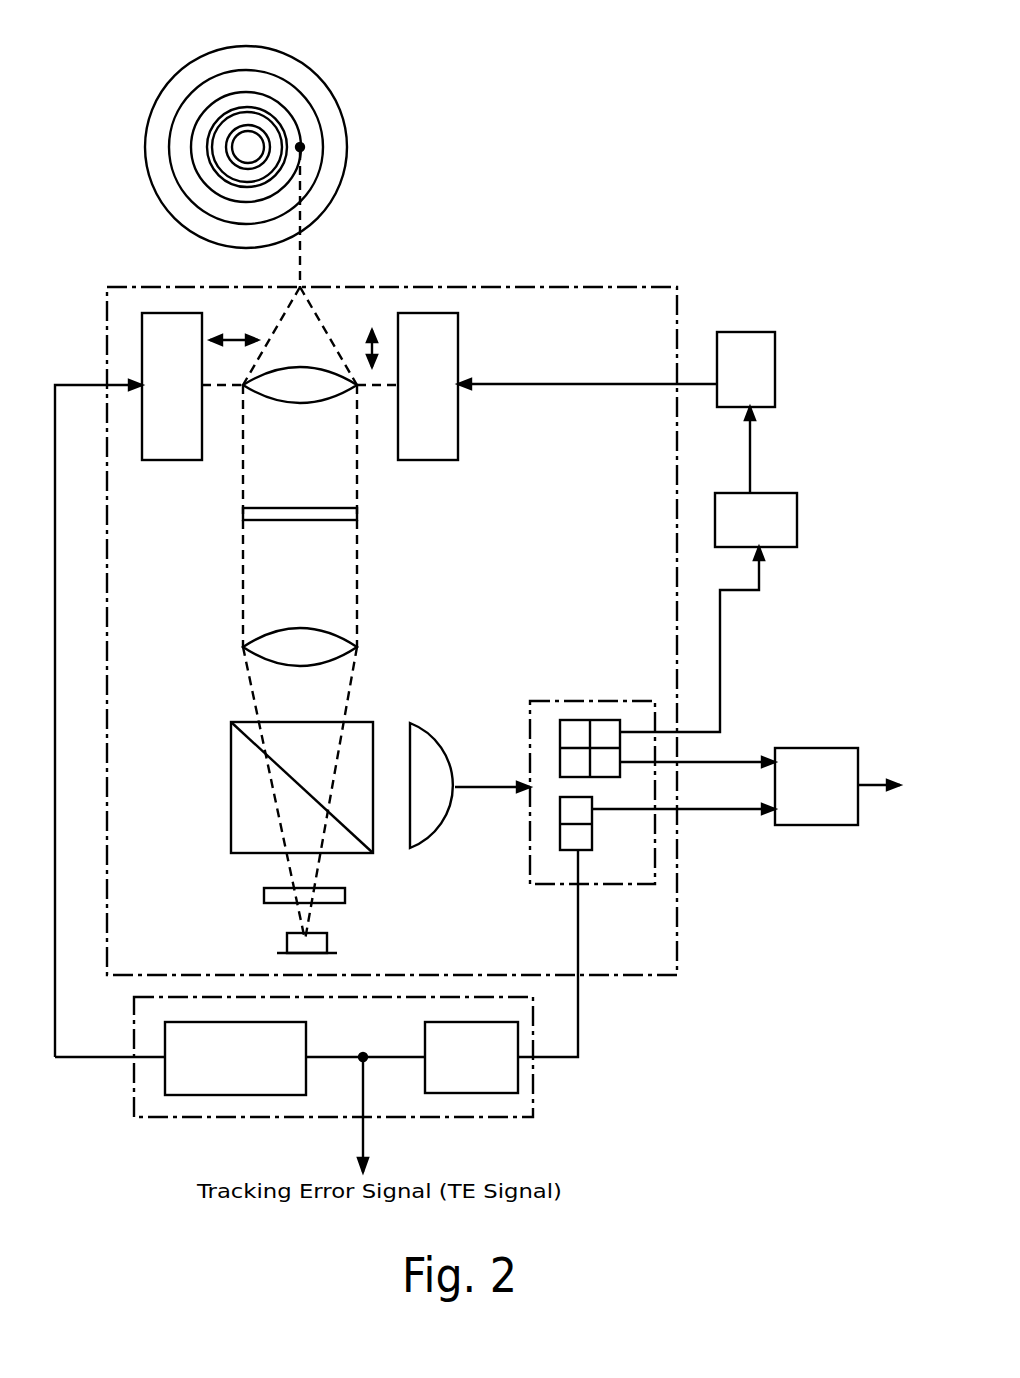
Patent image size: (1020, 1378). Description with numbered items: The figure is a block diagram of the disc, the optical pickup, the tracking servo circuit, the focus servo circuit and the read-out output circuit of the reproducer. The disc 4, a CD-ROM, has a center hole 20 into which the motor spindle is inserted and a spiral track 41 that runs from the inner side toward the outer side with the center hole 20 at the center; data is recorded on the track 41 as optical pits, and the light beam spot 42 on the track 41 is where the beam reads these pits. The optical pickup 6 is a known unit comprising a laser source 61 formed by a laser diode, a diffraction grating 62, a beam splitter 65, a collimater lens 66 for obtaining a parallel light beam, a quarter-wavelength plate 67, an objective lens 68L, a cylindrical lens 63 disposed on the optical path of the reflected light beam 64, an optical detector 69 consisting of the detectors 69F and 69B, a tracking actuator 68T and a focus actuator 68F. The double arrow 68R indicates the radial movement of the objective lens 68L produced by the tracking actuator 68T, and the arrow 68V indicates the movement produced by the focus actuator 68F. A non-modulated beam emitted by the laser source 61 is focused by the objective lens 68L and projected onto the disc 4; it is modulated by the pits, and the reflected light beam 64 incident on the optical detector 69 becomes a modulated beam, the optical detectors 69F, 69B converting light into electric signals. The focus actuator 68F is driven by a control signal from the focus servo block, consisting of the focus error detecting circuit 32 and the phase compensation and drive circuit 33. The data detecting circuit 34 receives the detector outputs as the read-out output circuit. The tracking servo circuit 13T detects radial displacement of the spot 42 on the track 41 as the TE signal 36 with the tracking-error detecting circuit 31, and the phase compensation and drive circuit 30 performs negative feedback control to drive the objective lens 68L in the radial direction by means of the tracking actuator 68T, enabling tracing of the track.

The disc 4 is at (318, 65).
The track 41 is at (330, 103).
The center hole 20 is at (247, 145).
The light beam spot 42 is at (300, 147).
The optical pickup 6 is at (510, 287).
The tracking actuator 68T is at (172, 460).
The focus actuator 68F is at (458, 440).
The objective lens 68L is at (305, 400).
The radial movement direction 68R is at (237, 324).
The vertical movement direction 68V is at (374, 329).
The quarter-wavelength plate 67 is at (357, 515).
The collimater lens 66 is at (303, 627).
The beam splitter 65 is at (231, 795).
The cylindrical lens 63 is at (428, 737).
The reflected light beam 64 is at (483, 790).
The diffraction grating 62 is at (264, 893).
The laser source 61 is at (287, 946).
The optical detector 69 is at (607, 884).
The optical detector 69F is at (602, 720).
The optical detector 69B is at (562, 845).
The data detecting circuit 34 is at (822, 745).
The phase compensation and drive circuit 33 is at (745, 332).
The focus error detecting circuit 32 is at (797, 520).
The tracking servo circuit 13T is at (133, 1102).
The phase compensation and drive circuit 30 is at (215, 1095).
The tracking-error detecting circuit 31 is at (463, 1093).
The TE signal 36 is at (358, 1132).